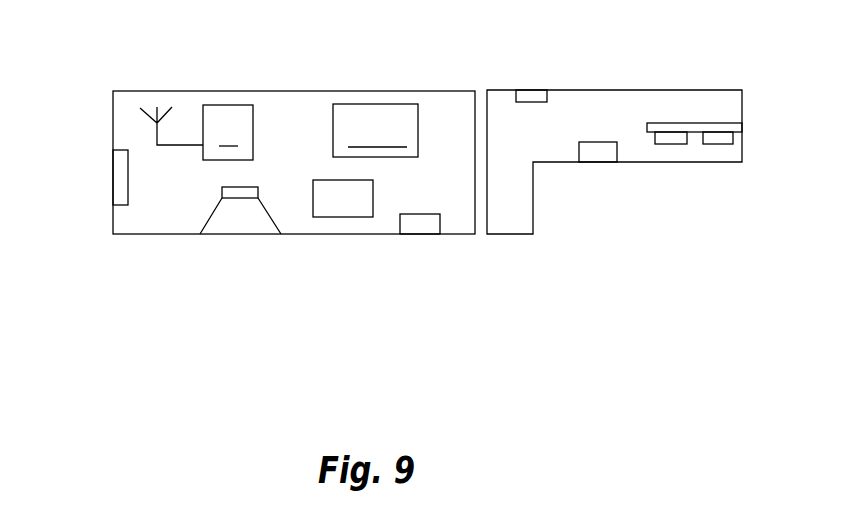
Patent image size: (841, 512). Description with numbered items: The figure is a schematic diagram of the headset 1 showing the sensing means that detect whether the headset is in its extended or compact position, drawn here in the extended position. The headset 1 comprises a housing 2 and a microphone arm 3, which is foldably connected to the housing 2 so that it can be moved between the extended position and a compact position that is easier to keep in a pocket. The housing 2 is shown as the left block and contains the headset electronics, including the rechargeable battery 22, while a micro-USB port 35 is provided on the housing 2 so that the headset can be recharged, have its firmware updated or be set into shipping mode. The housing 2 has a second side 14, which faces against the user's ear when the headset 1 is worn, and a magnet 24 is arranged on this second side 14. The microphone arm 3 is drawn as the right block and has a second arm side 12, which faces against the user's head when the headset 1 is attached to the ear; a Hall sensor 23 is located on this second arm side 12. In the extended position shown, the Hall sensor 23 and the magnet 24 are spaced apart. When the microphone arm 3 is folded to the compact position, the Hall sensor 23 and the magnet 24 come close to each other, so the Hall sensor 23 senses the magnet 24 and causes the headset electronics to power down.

The headset 1 is at (145, 48).
The housing 2 is at (289, 114).
The microphone arm 3 is at (616, 128).
The second arm side 12 is at (683, 162).
The second side of housing 14 is at (163, 235).
The rechargeable battery 22 is at (342, 213).
The Hall sensor 23 is at (593, 162).
The magnet 24 is at (421, 224).
The micro-USB port 35 is at (118, 174).